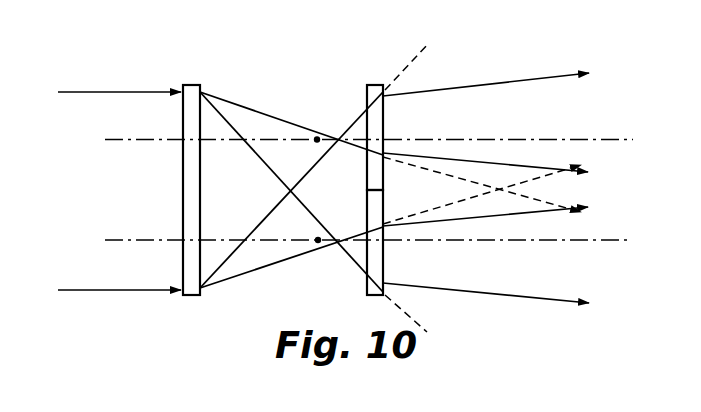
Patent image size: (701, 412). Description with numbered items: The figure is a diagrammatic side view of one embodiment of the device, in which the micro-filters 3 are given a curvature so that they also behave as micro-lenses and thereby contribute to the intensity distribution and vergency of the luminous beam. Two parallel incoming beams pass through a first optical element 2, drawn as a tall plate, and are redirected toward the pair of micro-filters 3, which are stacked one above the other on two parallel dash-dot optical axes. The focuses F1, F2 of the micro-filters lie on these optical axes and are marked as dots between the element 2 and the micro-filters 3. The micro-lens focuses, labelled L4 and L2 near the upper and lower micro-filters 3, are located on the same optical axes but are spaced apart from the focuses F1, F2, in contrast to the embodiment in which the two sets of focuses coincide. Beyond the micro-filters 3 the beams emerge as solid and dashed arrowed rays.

The lens 2 is at (190, 190).
The micro-filters 3 is at (379, 190).
The focus of the micro-filter F1 is at (302, 153).
The focus of the micro-filter F2 is at (302, 227).
The lens element L4 is at (348, 137).
The focus of the micro-lens L2 is at (348, 243).